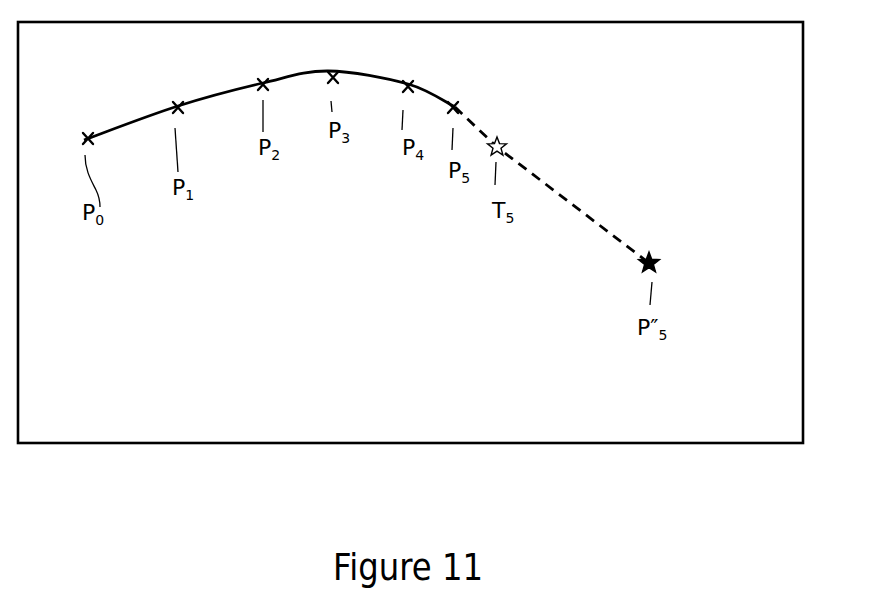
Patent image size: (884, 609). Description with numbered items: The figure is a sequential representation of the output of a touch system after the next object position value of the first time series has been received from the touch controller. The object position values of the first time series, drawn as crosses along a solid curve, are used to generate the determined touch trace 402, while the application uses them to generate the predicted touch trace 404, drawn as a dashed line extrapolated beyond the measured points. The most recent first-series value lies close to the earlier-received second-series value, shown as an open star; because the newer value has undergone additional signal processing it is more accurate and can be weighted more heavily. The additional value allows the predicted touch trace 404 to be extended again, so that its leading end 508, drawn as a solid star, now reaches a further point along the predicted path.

The determined touch trace 402 is at (120, 123).
The predicted touch trace 404 is at (577, 208).
The leading end 508 is at (706, 256).